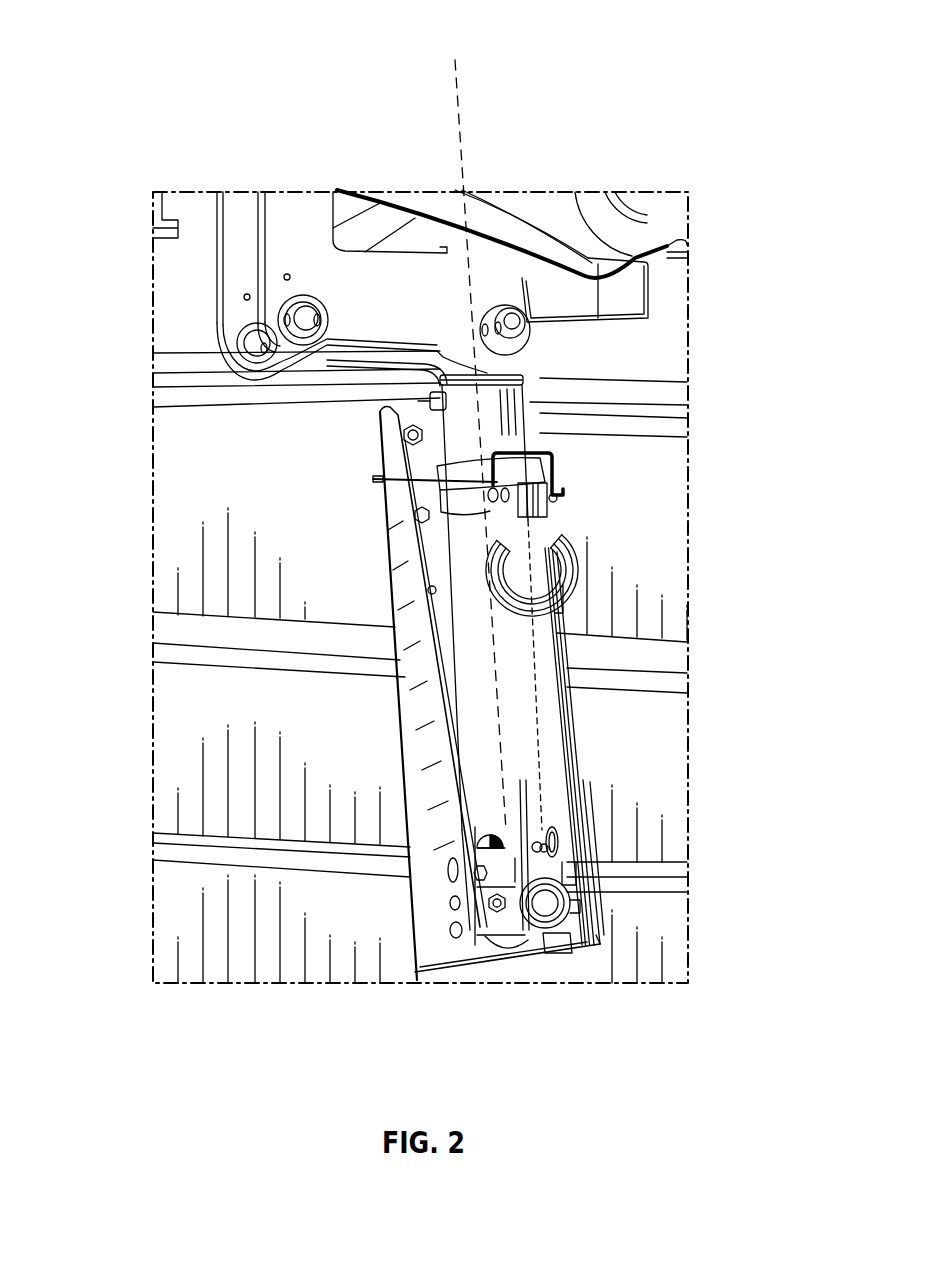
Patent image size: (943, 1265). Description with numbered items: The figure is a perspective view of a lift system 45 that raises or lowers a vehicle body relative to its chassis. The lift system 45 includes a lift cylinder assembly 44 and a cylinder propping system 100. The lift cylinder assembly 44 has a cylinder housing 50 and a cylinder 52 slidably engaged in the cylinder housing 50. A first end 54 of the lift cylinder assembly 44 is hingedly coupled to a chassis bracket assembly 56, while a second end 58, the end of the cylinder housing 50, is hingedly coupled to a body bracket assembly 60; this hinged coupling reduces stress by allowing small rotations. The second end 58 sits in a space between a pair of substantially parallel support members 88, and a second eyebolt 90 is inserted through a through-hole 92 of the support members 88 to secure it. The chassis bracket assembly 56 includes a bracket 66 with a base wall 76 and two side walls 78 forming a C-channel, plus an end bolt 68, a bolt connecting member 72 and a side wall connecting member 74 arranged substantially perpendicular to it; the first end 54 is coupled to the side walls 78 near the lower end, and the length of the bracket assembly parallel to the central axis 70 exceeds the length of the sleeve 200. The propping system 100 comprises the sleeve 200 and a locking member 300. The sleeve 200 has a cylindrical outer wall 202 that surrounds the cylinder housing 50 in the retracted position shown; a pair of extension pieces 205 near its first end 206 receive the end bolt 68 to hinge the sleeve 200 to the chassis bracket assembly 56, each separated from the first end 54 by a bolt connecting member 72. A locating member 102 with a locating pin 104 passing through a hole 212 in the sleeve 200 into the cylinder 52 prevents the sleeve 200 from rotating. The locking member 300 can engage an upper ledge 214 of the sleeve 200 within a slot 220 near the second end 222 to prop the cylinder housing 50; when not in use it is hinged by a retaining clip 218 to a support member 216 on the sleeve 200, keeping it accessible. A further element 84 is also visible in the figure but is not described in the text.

The lift system 45 is at (120, 55).
The central axis 70 is at (466, 82).
The support members 88 is at (282, 224).
The body bracket assembly 60 is at (227, 260).
The through-hole 92 is at (487, 312).
The second eyebolt 90 is at (514, 307).
The second end 222 is at (475, 470).
The lift cylinder assembly 44 is at (540, 443).
The cylinder housing 50 is at (553, 468).
The retaining clip 218 is at (687, 405).
The support member 216 is at (560, 507).
The upper ledge 214 is at (436, 503).
The slot 220 is at (412, 520).
The second end 58 is at (435, 358).
The locking member 300 is at (545, 563).
The sleeve 200 is at (583, 572).
The side walls 78 is at (567, 683).
The propping system 100 is at (565, 732).
The bracket 66 is at (583, 748).
The chassis bracket assembly 56 is at (395, 695).
The outer wall 202 is at (403, 752).
The hole 212 is at (480, 945).
The cylinder 52 is at (483, 841).
The locating pin 104 is at (557, 836).
The locating member 102 is at (560, 852).
The extension pieces 205 is at (553, 870).
The end bolt 68 is at (553, 900).
The first end 206 is at (530, 938).
The first end 54 is at (503, 943).
The bolt connecting member 72 is at (580, 920).
The side wall connecting member 74 is at (578, 948).
The base wall 76 is at (503, 950).
The retainer 84 is at (483, 943).